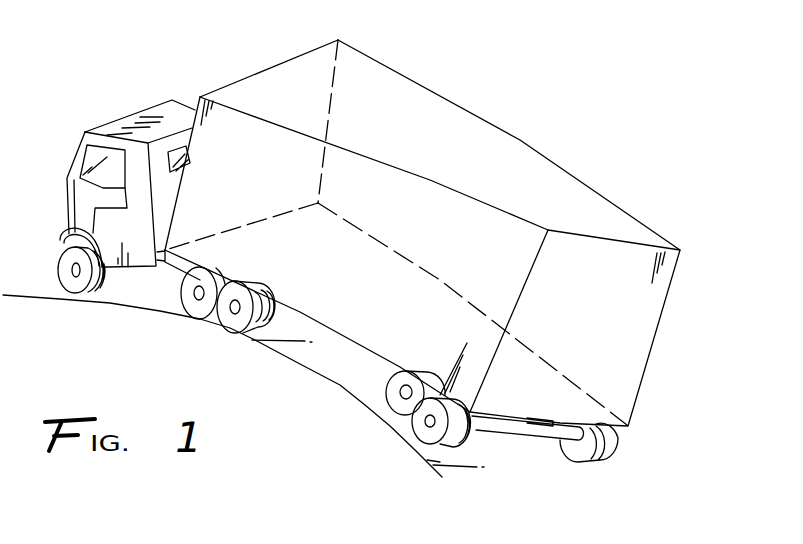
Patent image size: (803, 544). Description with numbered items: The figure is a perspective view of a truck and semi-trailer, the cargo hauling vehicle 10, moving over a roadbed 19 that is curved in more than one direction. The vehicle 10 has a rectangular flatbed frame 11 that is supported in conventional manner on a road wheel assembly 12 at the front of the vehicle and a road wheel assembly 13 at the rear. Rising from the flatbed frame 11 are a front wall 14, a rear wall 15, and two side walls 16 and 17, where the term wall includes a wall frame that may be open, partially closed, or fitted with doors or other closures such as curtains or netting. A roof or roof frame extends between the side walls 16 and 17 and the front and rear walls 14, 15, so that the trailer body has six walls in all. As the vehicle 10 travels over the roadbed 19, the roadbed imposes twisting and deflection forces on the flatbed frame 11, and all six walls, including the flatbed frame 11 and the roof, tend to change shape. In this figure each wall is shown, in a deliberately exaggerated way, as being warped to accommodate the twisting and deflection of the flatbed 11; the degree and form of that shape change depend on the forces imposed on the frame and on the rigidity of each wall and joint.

The cargo hauling vehicle 10 is at (270, 68).
The rectangular flatbed frame 11 is at (342, 317).
The road wheel assembly 12 is at (225, 343).
The road wheel assembly 13 is at (383, 420).
The front wall 14 is at (242, 93).
The rear wall 15 is at (650, 290).
The side wall 16 is at (483, 264).
The side wall 17 is at (543, 175).
The roadbed 19 is at (342, 386).